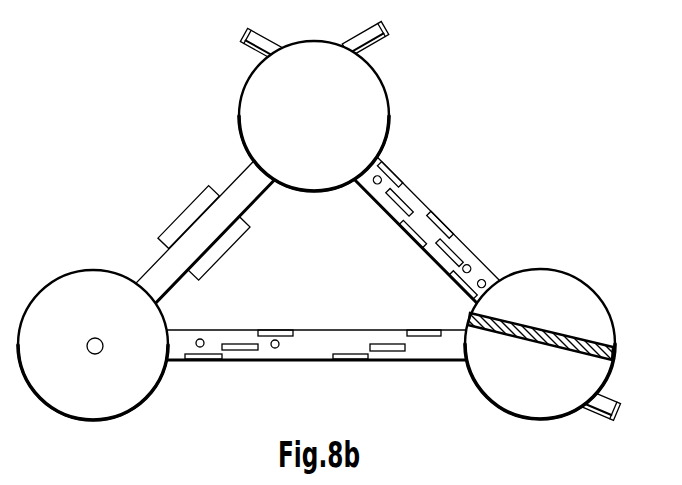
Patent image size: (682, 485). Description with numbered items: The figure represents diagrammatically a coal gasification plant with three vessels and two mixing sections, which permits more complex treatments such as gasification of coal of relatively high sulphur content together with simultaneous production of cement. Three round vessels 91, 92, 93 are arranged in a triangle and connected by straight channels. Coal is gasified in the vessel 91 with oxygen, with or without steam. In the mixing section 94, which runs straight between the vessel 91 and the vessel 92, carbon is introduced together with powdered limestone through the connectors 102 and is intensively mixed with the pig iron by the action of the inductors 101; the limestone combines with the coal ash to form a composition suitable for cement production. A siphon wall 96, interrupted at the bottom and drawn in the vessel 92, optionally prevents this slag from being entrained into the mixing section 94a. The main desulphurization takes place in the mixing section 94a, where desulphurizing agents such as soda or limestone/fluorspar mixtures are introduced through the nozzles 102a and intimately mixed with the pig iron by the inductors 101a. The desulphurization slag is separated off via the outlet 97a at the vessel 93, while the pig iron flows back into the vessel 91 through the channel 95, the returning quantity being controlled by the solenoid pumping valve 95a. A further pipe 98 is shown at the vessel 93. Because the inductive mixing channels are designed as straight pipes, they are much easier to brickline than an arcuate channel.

The vessel 91 is at (76, 265).
The vessel 92 is at (577, 267).
The vessel 93 is at (392, 85).
The mixing section 94 is at (307, 362).
The mixing section 94a is at (458, 235).
The return channel 95 is at (232, 198).
The solenoid pumping valve 95a is at (178, 223).
The siphon wall 96 is at (546, 343).
The slag separation outlet 97a is at (241, 33).
The pin 98 is at (383, 30).
The inductors 101 is at (418, 331).
The inductors 101a is at (413, 229).
The connectors 102 is at (275, 348).
The nozzles 102a is at (484, 280).